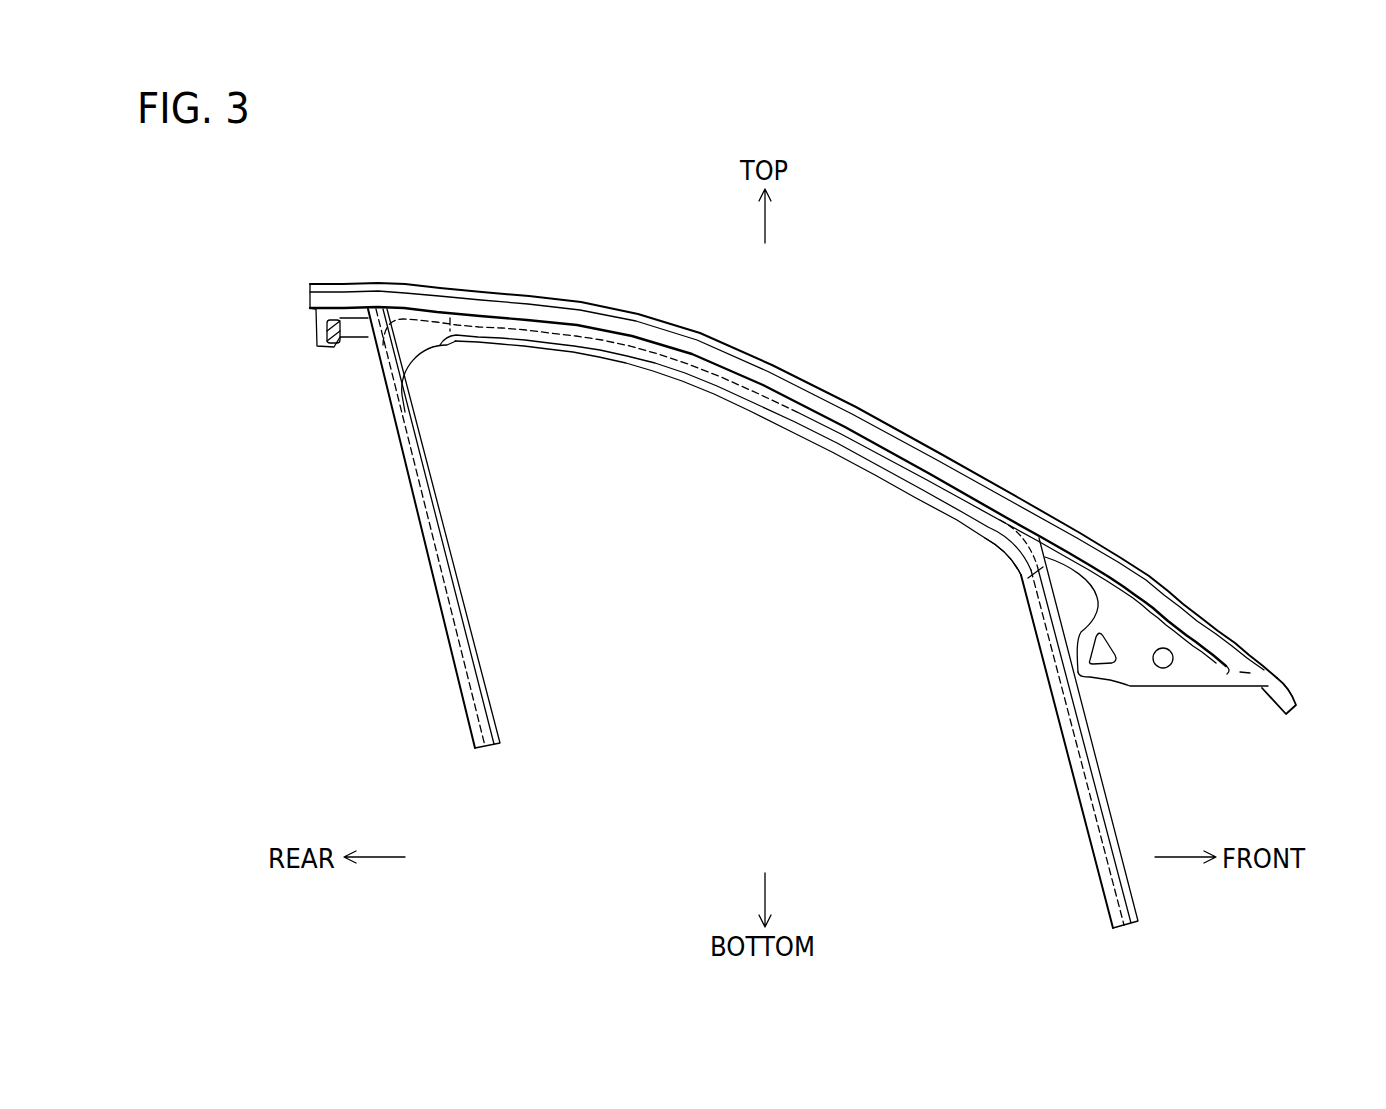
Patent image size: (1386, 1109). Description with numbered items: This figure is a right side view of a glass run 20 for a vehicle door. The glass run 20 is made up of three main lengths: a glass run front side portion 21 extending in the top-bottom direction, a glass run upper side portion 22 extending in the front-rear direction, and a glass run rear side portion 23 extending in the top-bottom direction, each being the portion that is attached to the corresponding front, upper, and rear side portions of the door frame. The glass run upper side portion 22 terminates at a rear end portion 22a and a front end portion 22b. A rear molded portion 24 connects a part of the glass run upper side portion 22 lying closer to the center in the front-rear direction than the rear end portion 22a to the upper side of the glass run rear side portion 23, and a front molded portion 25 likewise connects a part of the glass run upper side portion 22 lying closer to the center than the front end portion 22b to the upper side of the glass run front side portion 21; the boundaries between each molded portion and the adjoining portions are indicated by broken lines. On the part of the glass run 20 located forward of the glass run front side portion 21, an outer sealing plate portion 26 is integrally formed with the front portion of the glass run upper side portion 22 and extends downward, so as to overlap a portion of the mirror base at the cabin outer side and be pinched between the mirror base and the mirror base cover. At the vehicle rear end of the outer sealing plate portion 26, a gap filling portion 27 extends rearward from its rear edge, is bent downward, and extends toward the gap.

The glass run 20 is at (907, 396).
The glass run front side portion 21 is at (1117, 835).
The glass run upper side portion 22 is at (641, 316).
The rear end portion 22a is at (308, 303).
The front end portion 22b is at (1288, 716).
The glass run rear side portion 23 is at (446, 650).
The rear molded portion 24 is at (313, 325).
The front molded portion 25 is at (1015, 545).
The outer sealing plate portion 26 is at (1137, 663).
The gap filling portion 27 is at (1069, 625).